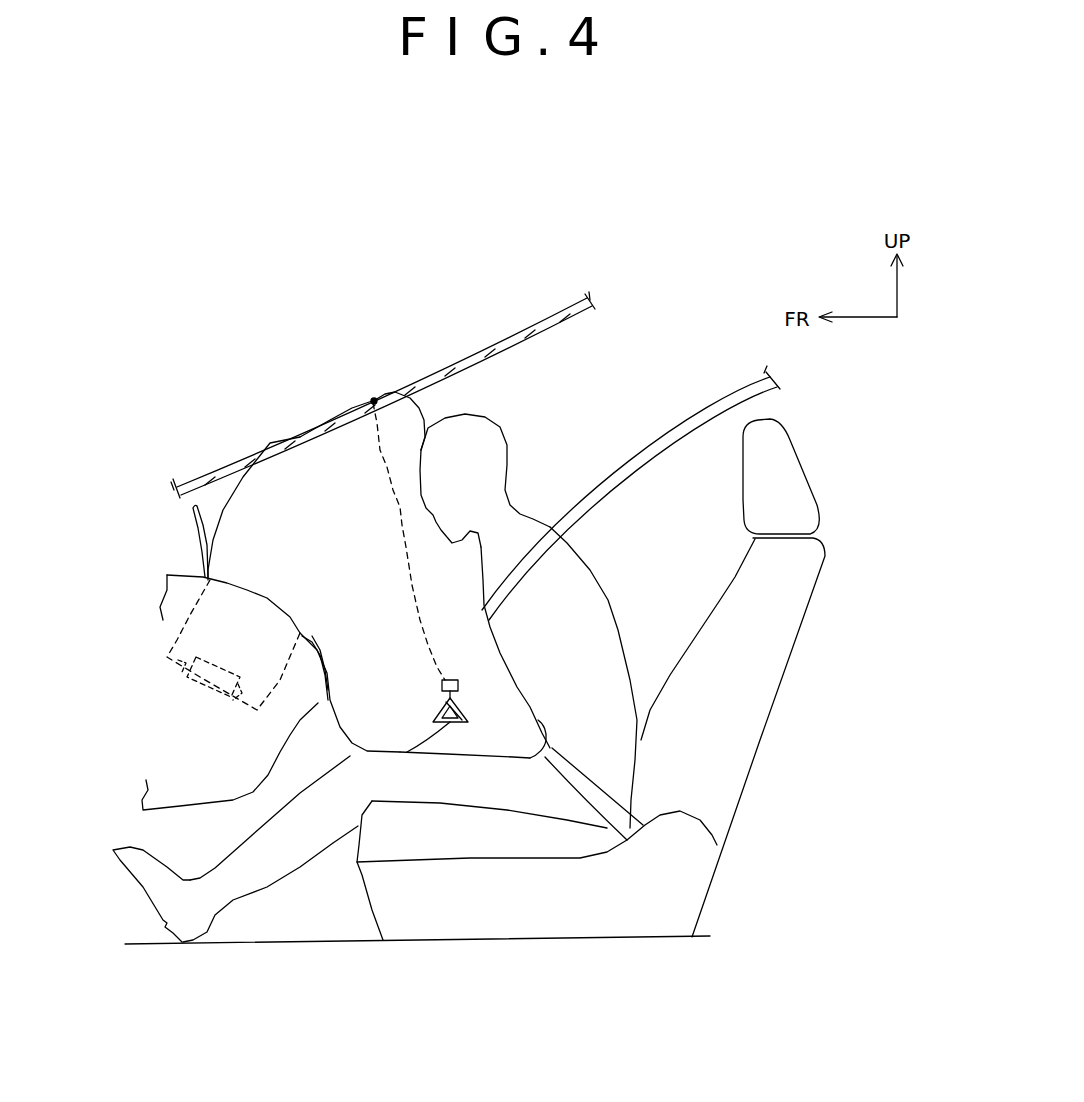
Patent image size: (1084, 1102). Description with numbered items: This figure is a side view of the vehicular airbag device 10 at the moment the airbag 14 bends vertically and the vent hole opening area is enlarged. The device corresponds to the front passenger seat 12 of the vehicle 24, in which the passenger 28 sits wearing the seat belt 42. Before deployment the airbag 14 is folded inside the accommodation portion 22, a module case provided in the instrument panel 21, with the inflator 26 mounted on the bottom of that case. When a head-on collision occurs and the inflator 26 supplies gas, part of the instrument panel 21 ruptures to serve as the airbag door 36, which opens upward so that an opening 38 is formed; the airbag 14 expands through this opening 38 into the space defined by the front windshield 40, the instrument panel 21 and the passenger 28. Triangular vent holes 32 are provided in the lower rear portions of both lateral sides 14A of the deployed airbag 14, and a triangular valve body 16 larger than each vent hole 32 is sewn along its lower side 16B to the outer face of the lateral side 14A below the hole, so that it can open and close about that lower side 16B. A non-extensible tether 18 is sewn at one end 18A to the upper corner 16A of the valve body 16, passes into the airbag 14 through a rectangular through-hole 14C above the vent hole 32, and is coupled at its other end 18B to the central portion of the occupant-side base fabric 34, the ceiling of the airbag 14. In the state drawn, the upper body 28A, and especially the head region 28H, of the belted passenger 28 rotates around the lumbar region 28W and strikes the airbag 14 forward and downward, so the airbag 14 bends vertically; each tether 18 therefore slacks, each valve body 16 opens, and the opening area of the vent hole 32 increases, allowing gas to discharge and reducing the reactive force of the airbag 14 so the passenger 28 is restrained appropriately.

The vehicular airbag device 10 is at (593, 378).
The front passenger seat 12 is at (773, 694).
The airbag 14 is at (413, 397).
The lateral sides 14A is at (391, 593).
The through-holes 14C is at (443, 687).
The valve bodies 16 is at (453, 720).
The upper corner 16A is at (468, 720).
The lower side 16B is at (422, 753).
The tethers 18 is at (390, 541).
The end 18A is at (457, 710).
The other end 18B is at (337, 435).
The instrument panel 21 is at (290, 741).
The accommodation portion 22 is at (199, 645).
The vehicle 24 is at (270, 380).
The inflator 26 is at (206, 707).
The passenger 28 is at (530, 511).
The upper body 28A is at (481, 581).
The head region 28H is at (508, 450).
The lumbar region 28W is at (597, 727).
The vent holes 32 is at (455, 720).
The occupant-side base fabric 34 is at (430, 410).
The airbag door 36 is at (195, 546).
The opening 38 is at (278, 552).
The front windshield 40 is at (294, 427).
The seat belt 42 is at (670, 448).